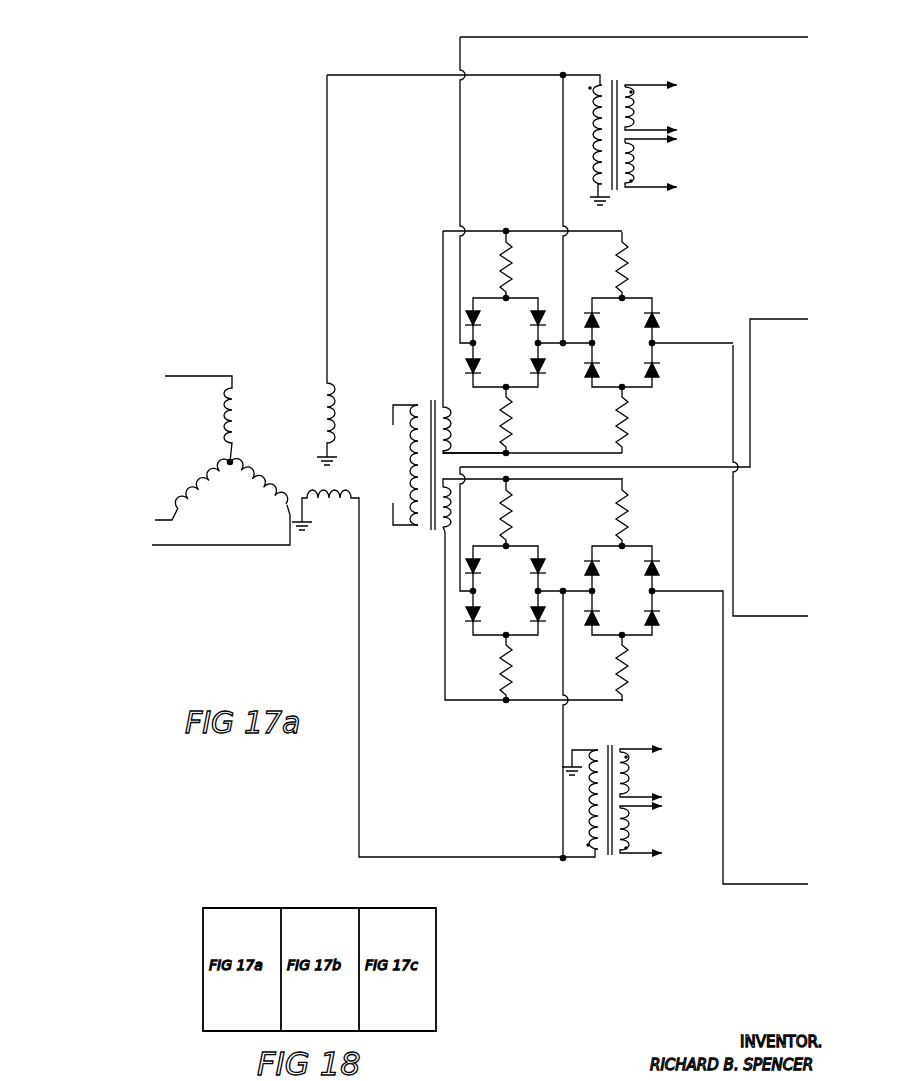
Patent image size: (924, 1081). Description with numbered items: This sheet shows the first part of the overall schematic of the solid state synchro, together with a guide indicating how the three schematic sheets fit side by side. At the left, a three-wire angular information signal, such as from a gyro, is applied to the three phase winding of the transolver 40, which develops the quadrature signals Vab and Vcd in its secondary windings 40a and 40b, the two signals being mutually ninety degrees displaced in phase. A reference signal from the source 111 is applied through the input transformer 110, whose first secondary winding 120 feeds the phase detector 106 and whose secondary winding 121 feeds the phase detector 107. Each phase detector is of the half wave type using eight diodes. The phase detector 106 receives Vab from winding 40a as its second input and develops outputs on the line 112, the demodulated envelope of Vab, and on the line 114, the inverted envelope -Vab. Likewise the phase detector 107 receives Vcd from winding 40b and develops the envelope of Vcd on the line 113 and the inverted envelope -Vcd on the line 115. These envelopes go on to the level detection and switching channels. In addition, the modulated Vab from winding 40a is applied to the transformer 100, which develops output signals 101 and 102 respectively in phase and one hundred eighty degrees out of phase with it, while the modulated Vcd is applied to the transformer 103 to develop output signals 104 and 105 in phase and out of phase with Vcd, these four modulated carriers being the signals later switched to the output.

The transolver 40 is at (283, 422).
The transolver secondary winding 40a is at (327, 418).
The transolver secondary winding 40b is at (329, 493).
The transformer 100 is at (618, 194).
The output signal 101 is at (668, 117).
The output signal 102 is at (668, 174).
The transformer 103 is at (610, 742).
The output signal 104 is at (663, 838).
The output signal 105 is at (663, 781).
The phase detector 106 is at (550, 266).
The phase detector 107 is at (575, 504).
The input transformer 110 is at (428, 396).
The reference source 111 is at (402, 451).
The line 112 is at (746, 37).
The line 113 is at (750, 318).
The line 114 is at (800, 614).
The line 115 is at (800, 883).
The first secondary winding 120 is at (450, 433).
The secondary winding 121 is at (440, 526).